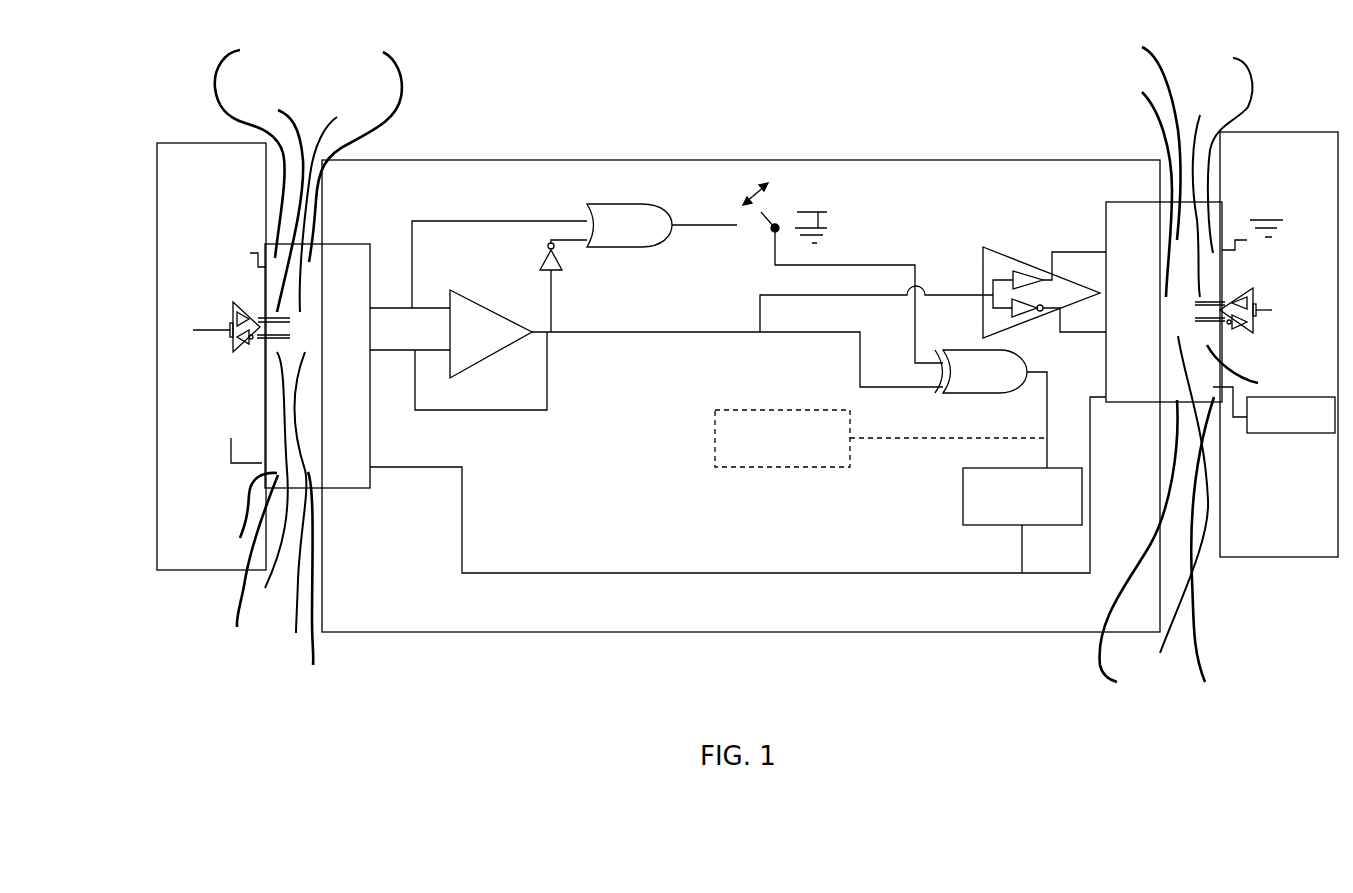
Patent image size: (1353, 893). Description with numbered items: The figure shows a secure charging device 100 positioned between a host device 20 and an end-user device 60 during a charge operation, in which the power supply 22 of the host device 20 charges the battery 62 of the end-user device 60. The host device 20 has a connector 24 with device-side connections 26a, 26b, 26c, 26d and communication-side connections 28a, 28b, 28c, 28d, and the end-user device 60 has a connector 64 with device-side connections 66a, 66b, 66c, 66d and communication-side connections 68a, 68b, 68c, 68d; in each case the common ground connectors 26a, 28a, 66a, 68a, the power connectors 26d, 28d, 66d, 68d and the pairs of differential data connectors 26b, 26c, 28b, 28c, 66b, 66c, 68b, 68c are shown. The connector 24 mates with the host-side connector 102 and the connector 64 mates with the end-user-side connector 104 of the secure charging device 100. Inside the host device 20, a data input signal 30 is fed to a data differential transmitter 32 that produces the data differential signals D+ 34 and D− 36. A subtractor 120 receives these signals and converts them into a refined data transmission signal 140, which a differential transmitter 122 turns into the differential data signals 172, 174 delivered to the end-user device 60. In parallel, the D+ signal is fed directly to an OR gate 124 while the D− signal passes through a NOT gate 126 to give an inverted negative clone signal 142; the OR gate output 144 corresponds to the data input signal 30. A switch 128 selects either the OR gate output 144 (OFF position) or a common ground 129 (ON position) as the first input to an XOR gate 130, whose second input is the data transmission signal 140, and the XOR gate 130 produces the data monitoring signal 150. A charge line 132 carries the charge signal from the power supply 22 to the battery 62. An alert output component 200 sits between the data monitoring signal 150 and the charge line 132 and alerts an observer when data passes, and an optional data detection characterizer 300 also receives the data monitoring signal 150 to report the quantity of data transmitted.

The host device 20 is at (163, 557).
The power supply 22 is at (212, 440).
The connector 24 is at (251, 518).
The device-side common ground connector 26a is at (250, 147).
The device-side differential data connector 26b is at (274, 205).
The device-side differential data connector 26c is at (268, 484).
The device-side power connector 26d is at (251, 562).
The communication-side common ground connector 28a is at (355, 150).
The communication-side differential data connector 28b is at (339, 205).
The communication-side differential data connector 28c is at (289, 508).
The communication-side power connector 28d is at (308, 579).
The data input signal 30 is at (212, 332).
The data differential transmitter 32 is at (237, 312).
The data differential signal (D+) 34 is at (265, 320).
The data differential signal (D−) 36 is at (258, 342).
The end-user device 60 is at (1318, 557).
The battery 62 is at (1293, 433).
The connector 64 is at (1223, 405).
The device-side common ground connector 66a is at (1225, 148).
The device-side differential data connector 66b is at (1213, 191).
The device-side differential data connector 66c is at (1251, 504).
The device-side power connector 66d is at (1217, 548).
The communication-side common ground connector 68a is at (1141, 134).
The communication-side differential data connector 68b is at (1136, 183).
The communication-side differential data connector 68c is at (1163, 499).
The communication-side power connector 68d is at (1139, 550).
The secure charging device 100 is at (505, 613).
The host-side connector 102 is at (347, 488).
The end-user-side connector 104 is at (1140, 400).
The subtractor 120 is at (478, 325).
The differential transmitter 122 is at (990, 268).
The OR gate 124 is at (646, 214).
The NOT gate 126 is at (540, 258).
The switch 128 is at (745, 190).
The common ground 129 is at (833, 238).
The XOR gate 130 is at (973, 395).
The charge line 132 is at (767, 567).
The data transmission signal 140 is at (625, 332).
The inverted negative clone signal 142 is at (572, 242).
The OR gate output 144 is at (684, 225).
The data monitoring signal 150 is at (1043, 397).
The differential data signal (D+) 172 is at (1077, 253).
The differential data signal (D−) 174 is at (1087, 333).
The alert output component 200 is at (967, 498).
The data detection characterizer 300 is at (740, 462).